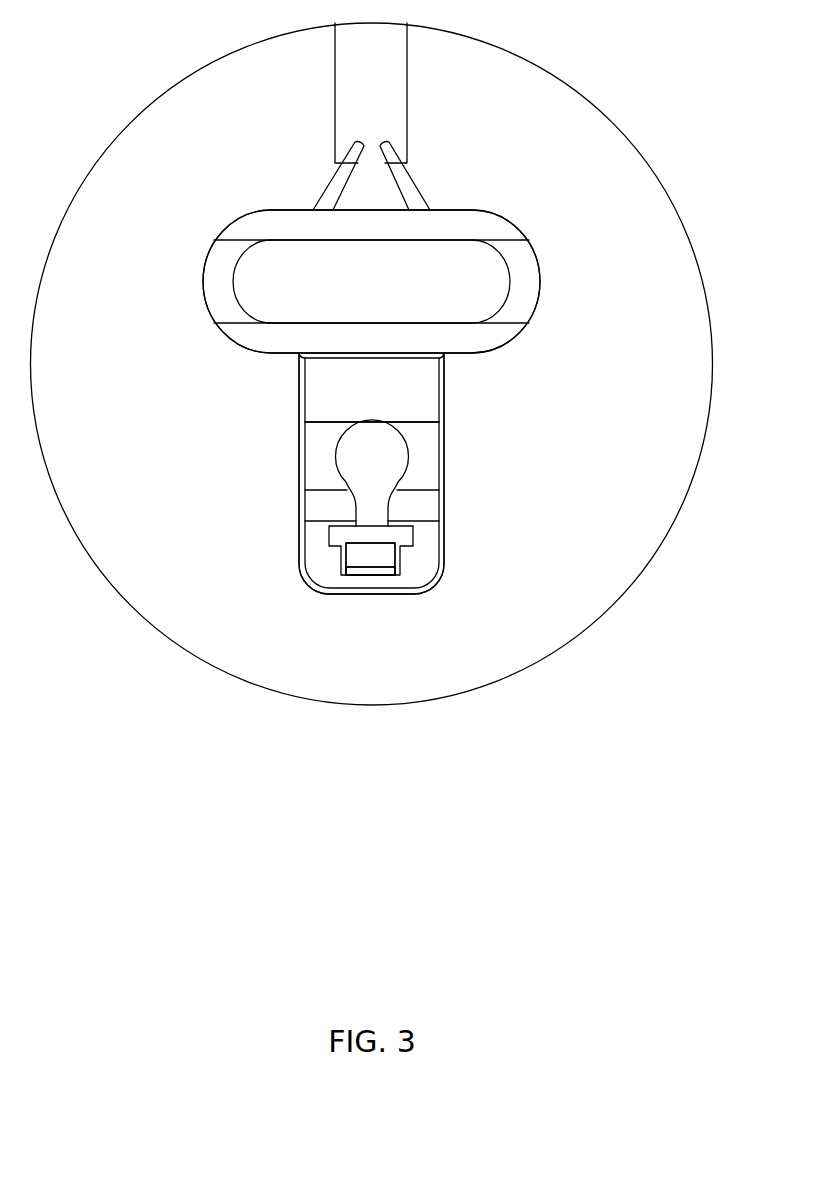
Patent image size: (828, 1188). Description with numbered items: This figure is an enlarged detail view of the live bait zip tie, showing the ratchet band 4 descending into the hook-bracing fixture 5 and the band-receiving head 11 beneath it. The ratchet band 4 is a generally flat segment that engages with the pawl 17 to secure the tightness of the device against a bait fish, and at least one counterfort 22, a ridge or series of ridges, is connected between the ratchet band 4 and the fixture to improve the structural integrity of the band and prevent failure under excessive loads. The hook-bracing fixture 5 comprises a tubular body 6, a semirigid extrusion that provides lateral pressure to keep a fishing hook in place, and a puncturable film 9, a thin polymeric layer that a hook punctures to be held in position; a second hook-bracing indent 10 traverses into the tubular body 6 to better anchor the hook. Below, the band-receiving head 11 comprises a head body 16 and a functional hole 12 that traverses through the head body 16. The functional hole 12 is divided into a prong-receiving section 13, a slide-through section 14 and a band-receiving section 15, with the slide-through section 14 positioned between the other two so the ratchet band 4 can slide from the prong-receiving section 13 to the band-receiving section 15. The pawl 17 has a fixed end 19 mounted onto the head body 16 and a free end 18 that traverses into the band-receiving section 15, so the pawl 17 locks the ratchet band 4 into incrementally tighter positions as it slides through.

The ratchet band 4 is at (370, 75).
The hook-bracing fixture 5 is at (250, 173).
The counterfort 22 is at (392, 150).
The tubular body 6 is at (483, 227).
The second hook-bracing indent 10 is at (525, 292).
The puncturable film 9 is at (382, 299).
The band-receiving head 11 is at (250, 378).
The head body 16 is at (457, 442).
The functional hole 12 is at (400, 412).
The prong-receiving section 13 is at (337, 450).
The slide-through section 14 is at (388, 512).
The band-receiving section 15 is at (330, 533).
The free end 18 is at (390, 558).
The pawl 17 is at (388, 578).
The fixed end 19 is at (370, 572).